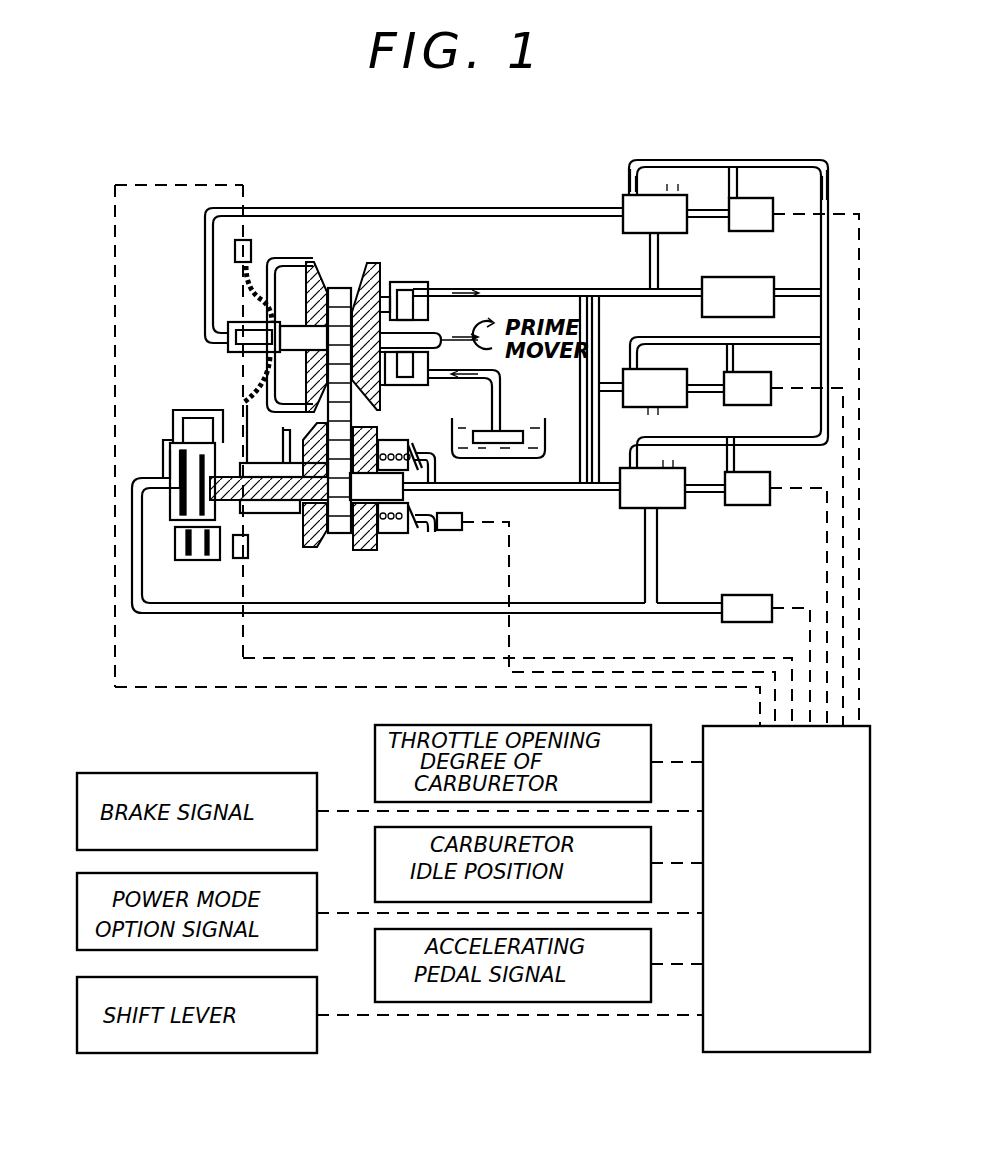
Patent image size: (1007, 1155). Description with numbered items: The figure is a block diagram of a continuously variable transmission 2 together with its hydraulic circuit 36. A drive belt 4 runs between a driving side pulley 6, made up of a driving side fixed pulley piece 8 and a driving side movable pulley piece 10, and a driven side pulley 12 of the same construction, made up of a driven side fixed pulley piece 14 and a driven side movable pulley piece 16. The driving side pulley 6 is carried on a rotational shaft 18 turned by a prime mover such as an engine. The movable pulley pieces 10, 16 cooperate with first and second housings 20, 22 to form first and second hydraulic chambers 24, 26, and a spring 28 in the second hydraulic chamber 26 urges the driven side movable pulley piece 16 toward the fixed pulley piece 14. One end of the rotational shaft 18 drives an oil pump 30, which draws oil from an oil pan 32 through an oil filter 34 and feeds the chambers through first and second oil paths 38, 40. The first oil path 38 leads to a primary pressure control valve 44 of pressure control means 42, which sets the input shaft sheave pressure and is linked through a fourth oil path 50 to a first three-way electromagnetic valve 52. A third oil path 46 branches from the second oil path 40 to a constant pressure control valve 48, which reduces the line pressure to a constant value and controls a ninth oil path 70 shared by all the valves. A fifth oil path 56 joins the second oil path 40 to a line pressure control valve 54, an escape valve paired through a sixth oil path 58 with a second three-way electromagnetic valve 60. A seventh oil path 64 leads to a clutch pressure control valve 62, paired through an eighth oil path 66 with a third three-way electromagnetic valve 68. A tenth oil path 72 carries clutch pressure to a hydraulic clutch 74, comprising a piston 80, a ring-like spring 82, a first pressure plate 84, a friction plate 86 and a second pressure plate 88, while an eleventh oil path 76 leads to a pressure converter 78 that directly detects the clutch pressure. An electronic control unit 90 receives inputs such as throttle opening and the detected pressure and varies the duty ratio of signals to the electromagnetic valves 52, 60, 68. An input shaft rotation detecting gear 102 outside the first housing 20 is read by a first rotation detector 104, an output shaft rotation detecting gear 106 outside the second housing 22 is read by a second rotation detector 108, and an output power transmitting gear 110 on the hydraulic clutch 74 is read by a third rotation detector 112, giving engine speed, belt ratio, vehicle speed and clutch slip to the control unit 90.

The continuously variable transmission 2 is at (778, 128).
The drive belt 4 is at (340, 300).
The driving side pulley 6 is at (203, 343).
The driving side fixed pulley piece 8 is at (374, 272).
The driving side movable pulley piece 10 is at (318, 283).
The driven side pulley 12 is at (431, 538).
The driven side fixed pulley piece 14 is at (318, 548).
The driven side movable pulley piece 16 is at (356, 535).
The rotational shaft 18 is at (420, 343).
The first housing 20 is at (276, 360).
The second housing 22 is at (400, 452).
The first hydraulic chamber 24 is at (272, 378).
The second hydraulic chamber 26 is at (383, 540).
The spring 28 is at (405, 533).
The oil pump 30 is at (412, 292).
The oil pan 32 is at (518, 460).
The oil filter 34 is at (510, 432).
The hydraulic circuit 36 is at (427, 195).
The first oil path 38 is at (533, 208).
The second oil path 40 is at (588, 288).
The pressure control means 42 is at (617, 171).
The primary pressure control valve 44 is at (655, 200).
The third oil path 46 is at (668, 297).
The constant pressure control valve 48 is at (761, 297).
The fourth oil path 50 is at (702, 220).
The first three-way electromagnetic valve 52 is at (751, 199).
The line pressure control valve 54 is at (722, 385).
The fifth oil path 56 is at (615, 392).
The sixth oil path 58 is at (700, 393).
The second three-way electromagnetic valve 60 is at (747, 388).
The clutch pressure control valve 62 is at (677, 472).
The seventh oil path 64 is at (645, 575).
The eighth oil path 66 is at (702, 494).
The third three-way electromagnetic valve 68 is at (747, 488).
The ninth oil path 70 is at (808, 160).
The tenth oil path 72 is at (432, 613).
The hydraulic clutch 74 is at (156, 423).
The eleventh oil path 76 is at (680, 603).
The pressure converter 78 is at (748, 595).
The piston 80 is at (174, 518).
The ring-like spring 82 is at (180, 548).
The first pressure plate 84 is at (187, 558).
The friction plate 86 is at (213, 563).
The second pressure plate 88 is at (218, 562).
The electronic control unit 90 is at (786, 1052).
The input shaft rotation detecting gear 102 is at (244, 292).
The first rotation detector 104 is at (235, 248).
The output shaft rotation detecting gear 106 is at (433, 458).
The second rotation detector 108 is at (463, 522).
The output power transmitting gear 110 is at (248, 432).
The third rotation detector 112 is at (250, 557).